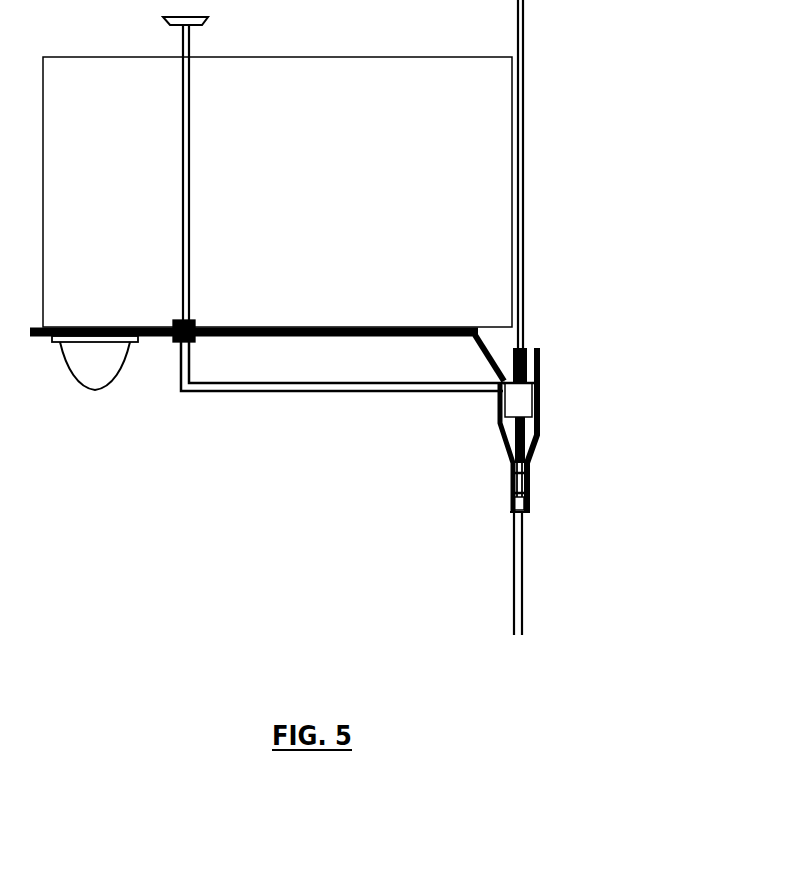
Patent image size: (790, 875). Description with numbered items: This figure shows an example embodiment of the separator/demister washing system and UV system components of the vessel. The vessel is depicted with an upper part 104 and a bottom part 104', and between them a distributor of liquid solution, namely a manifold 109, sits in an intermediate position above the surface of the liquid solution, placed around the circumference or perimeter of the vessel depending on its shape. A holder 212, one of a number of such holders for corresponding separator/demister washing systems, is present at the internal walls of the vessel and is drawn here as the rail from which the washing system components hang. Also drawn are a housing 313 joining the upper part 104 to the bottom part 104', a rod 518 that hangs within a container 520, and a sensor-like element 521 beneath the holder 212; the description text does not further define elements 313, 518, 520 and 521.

The upper part 104 is at (584, 174).
The bottom part 104' is at (586, 573).
The manifold 109 is at (506, 412).
The holder 212 is at (275, 352).
The connector housing 313 is at (553, 448).
The stirring rod 518 is at (204, 127).
The container 520 is at (372, 264).
The sensor 521 is at (84, 375).